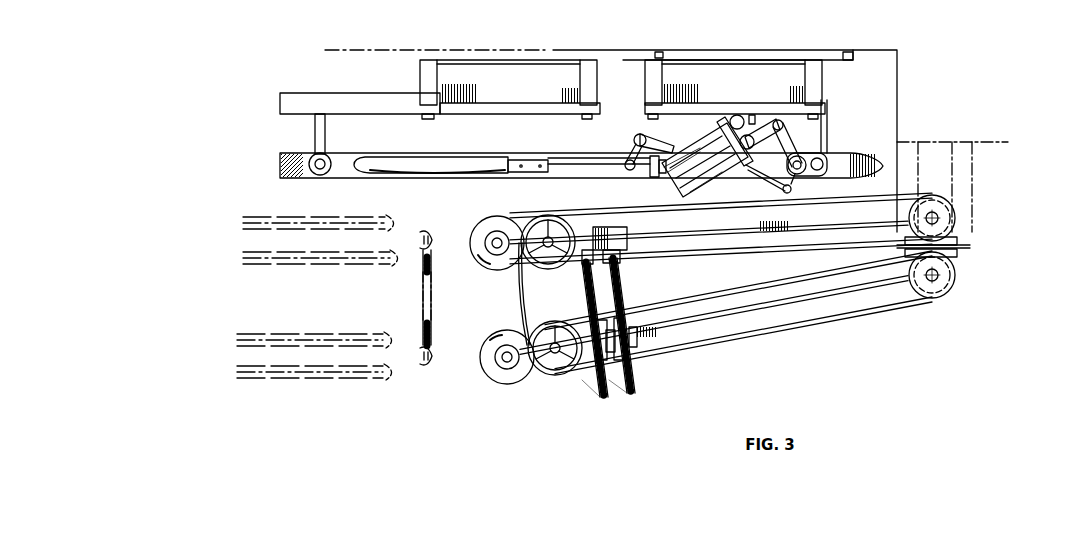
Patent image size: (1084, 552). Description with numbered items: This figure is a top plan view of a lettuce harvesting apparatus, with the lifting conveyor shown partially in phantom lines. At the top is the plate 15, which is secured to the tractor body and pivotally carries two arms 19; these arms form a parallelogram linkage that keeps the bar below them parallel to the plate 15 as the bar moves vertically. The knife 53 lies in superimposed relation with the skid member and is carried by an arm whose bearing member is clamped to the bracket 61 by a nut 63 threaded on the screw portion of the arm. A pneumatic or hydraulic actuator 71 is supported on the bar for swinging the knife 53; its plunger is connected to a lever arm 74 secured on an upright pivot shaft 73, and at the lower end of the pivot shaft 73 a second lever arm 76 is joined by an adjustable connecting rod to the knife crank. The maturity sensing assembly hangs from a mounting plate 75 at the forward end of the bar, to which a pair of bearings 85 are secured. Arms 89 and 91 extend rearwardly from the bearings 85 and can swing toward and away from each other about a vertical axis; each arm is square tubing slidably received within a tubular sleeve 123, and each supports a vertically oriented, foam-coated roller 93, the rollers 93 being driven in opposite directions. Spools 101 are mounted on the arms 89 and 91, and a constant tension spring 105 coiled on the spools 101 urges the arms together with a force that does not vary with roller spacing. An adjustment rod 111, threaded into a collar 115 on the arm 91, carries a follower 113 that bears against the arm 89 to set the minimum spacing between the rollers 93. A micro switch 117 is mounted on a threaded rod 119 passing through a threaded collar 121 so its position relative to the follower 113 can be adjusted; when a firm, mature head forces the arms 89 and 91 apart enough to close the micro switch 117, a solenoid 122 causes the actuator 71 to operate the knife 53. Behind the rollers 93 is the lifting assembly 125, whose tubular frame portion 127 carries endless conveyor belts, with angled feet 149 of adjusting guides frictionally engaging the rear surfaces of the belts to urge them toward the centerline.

The plate 15 is at (814, 58).
The arms 19 is at (478, 75).
The knife 53 is at (462, 168).
The bracket 61 is at (646, 172).
The nut 63 is at (661, 175).
The actuator 71 is at (720, 170).
The pivot shaft 73 is at (792, 188).
The lever arm 74 is at (792, 142).
The mounting plate 75 is at (970, 247).
The lever arm 76 is at (789, 172).
The bearings 85 is at (955, 218).
The arm 89 is at (862, 228).
The arm 91 is at (800, 305).
The rollers 93 is at (482, 236).
The spools 101 is at (530, 232).
The constant tension spring 105 is at (516, 292).
The adjustment rod 111 is at (605, 396).
The follower 113 is at (586, 268).
The collar 115 is at (592, 332).
The micro switch 117 is at (619, 264).
The threaded rod 119 is at (636, 388).
The threaded collar 121 is at (628, 330).
The solenoid 122 is at (712, 133).
The tubular sleeve 123 is at (590, 238).
The lifting assembly 125 is at (326, 392).
The tubular frame portion 127 is at (406, 232).
The angled feet 149 is at (424, 298).